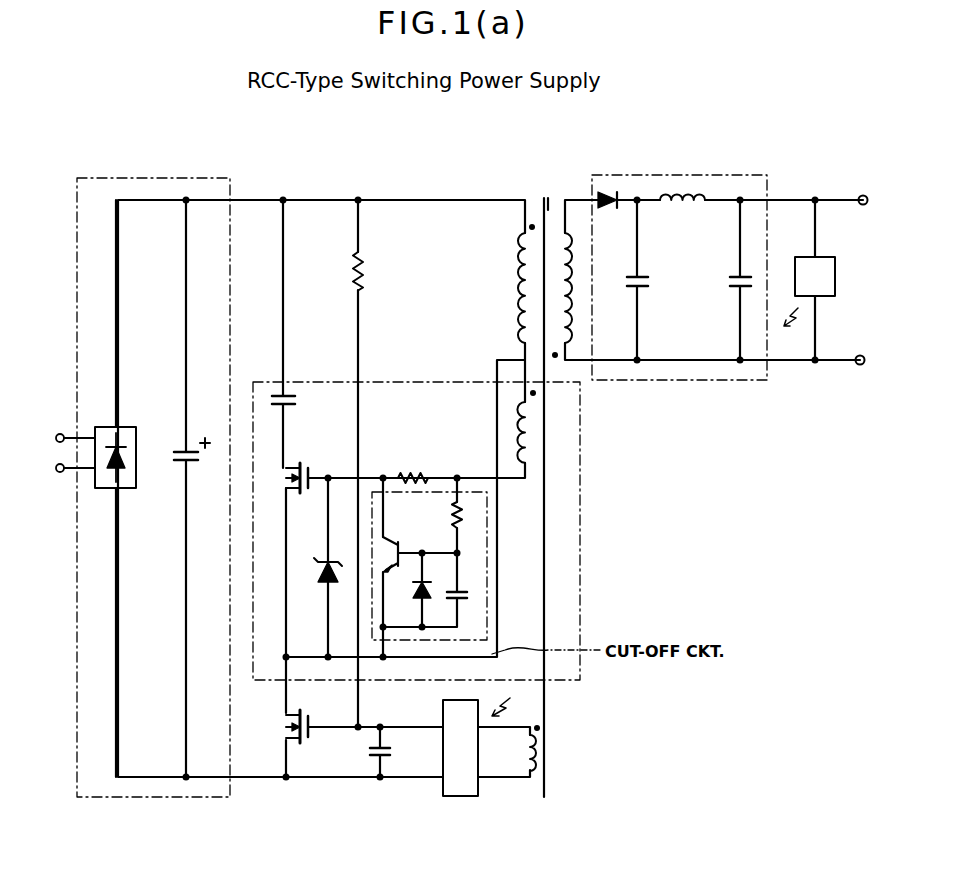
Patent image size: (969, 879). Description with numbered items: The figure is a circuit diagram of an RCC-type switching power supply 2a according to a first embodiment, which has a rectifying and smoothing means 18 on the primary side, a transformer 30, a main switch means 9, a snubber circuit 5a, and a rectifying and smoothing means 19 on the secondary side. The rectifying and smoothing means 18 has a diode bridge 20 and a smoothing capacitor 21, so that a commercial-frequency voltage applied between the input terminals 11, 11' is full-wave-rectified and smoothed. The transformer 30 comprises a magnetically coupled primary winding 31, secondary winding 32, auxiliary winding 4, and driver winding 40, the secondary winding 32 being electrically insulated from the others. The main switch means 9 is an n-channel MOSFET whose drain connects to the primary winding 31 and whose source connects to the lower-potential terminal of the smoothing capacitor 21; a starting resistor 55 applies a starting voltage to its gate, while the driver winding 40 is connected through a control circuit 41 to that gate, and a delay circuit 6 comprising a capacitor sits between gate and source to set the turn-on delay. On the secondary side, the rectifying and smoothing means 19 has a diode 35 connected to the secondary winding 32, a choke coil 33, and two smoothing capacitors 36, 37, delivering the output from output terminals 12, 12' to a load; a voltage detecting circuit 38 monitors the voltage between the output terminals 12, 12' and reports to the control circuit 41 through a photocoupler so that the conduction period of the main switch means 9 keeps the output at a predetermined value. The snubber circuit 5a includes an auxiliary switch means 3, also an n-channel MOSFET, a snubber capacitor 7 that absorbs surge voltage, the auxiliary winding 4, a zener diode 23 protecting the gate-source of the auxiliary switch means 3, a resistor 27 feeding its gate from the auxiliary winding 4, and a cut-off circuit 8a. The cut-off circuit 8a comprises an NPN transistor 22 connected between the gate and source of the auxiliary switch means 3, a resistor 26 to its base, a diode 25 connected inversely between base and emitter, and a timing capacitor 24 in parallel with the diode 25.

The RCC-type switching power supply 2a is at (176, 150).
The rectifying and smoothing means 18 is at (176, 797).
The diode bridge 20 is at (110, 490).
The input terminal 11 is at (62, 410).
The input terminal 11' is at (61, 500).
The smoothing capacitor 21 is at (184, 466).
The snubber circuit 5a is at (380, 382).
The cut-off circuit 8a is at (487, 640).
The starting resistor 55 is at (364, 270).
The snubber capacitor 7 is at (297, 400).
The auxiliary switch means 3 is at (300, 465).
The zener diode 23 is at (322, 568).
The resistor 27 is at (419, 476).
The NPN transistor 22 is at (392, 552).
The resistor 26 is at (462, 514).
The timing capacitor 24 is at (468, 595).
The diode 25 is at (430, 592).
The auxiliary winding 4 is at (518, 424).
The primary winding 31 is at (518, 288).
The secondary winding 32 is at (574, 322).
The transformer 30 is at (546, 198).
The rectifying and smoothing means 19 is at (738, 382).
The diode 35 is at (606, 194).
The choke coil 33 is at (690, 190).
The smoothing capacitor 36 is at (652, 282).
The smoothing capacitor 37 is at (728, 278).
The voltage detecting circuit 38 is at (838, 278).
The output terminal 12 is at (846, 174).
The output terminal 12' is at (866, 396).
The main switch means 9 is at (310, 738).
The delay circuit 6 is at (393, 752).
The control circuit 41 is at (441, 709).
The driver winding 40 is at (538, 770).